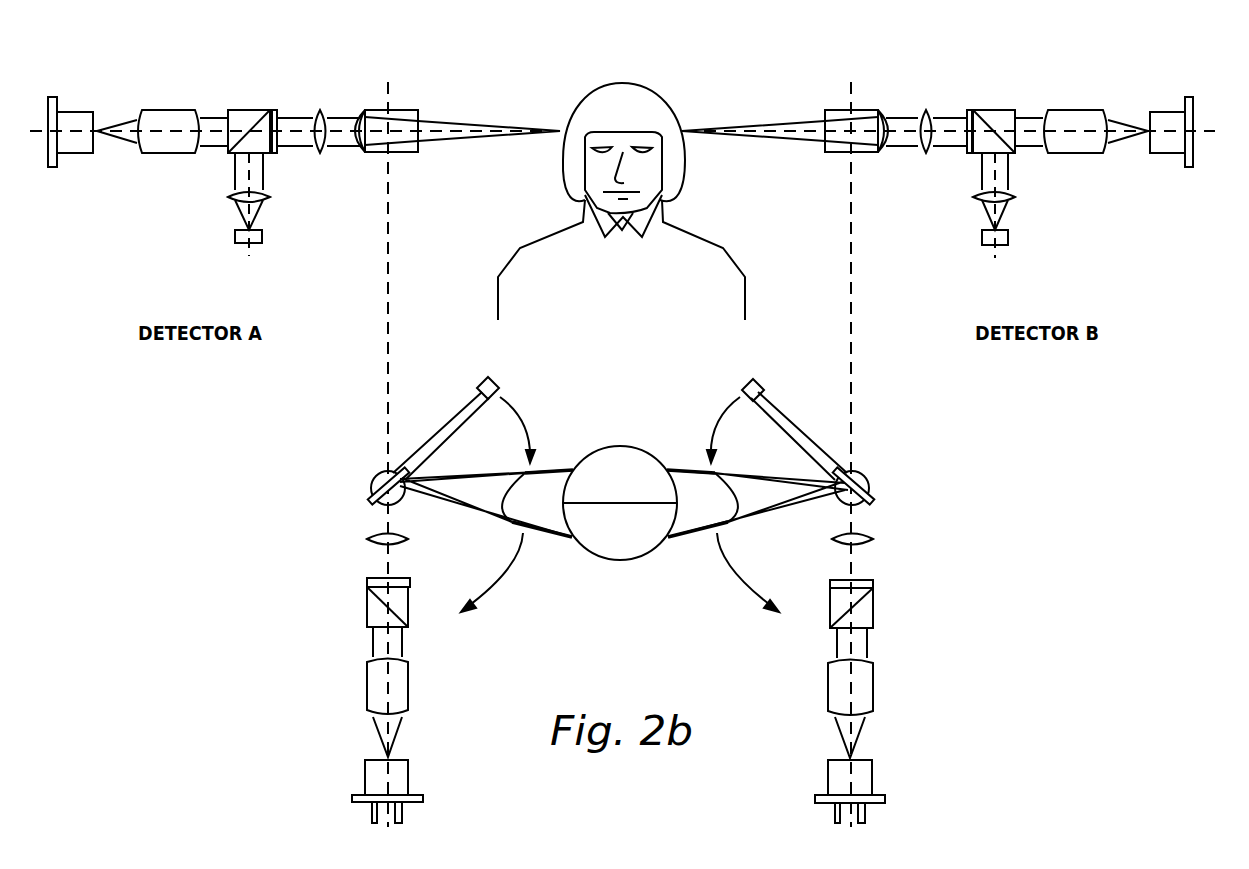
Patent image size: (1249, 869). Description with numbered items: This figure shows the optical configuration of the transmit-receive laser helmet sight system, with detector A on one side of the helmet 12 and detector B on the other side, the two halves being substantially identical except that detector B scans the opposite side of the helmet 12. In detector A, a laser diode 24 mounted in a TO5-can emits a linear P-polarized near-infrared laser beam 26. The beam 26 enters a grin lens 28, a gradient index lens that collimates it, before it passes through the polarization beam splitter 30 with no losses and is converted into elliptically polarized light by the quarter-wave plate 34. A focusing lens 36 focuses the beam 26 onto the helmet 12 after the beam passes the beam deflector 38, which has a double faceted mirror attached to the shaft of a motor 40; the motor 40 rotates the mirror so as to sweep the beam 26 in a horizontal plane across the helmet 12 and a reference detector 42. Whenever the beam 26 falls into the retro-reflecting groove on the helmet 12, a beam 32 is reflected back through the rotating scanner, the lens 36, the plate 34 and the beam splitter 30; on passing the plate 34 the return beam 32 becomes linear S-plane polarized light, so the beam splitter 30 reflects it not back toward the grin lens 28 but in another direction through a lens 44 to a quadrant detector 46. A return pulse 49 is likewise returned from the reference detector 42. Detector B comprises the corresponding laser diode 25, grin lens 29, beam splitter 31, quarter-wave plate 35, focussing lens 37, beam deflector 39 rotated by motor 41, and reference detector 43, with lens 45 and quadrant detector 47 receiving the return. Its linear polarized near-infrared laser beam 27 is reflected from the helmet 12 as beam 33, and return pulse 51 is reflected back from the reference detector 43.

The helmet 12 is at (606, 86).
The laser diode 24 is at (73, 112).
The laser diode 25 is at (1172, 112).
The laser beam 26 is at (125, 121).
The laser beam 27 is at (1122, 125).
The grin lens 28 is at (160, 110).
The grin lens 29 is at (1085, 110).
The polarization beam splitter 30 is at (250, 110).
The beam splitter 31 is at (995, 110).
The reflected beam 32 is at (455, 120).
The reflected beam 33 is at (790, 120).
The quarter-wave plate 34 is at (275, 153).
The quarter-wave plate 35 is at (970, 153).
The focusing lens 36 is at (321, 153).
The focussing lens 37 is at (925, 153).
The beam deflector 38 is at (404, 110).
The beam deflector 39 is at (846, 110).
The motor 40 is at (385, 472).
The motor 41 is at (868, 473).
The reference detector 42 is at (477, 380).
The reference detector 43 is at (764, 383).
The lens 44 is at (232, 199).
The lens 45 is at (1012, 199).
The quadrant detector 46 is at (235, 240).
The quadrant detector 47 is at (1010, 240).
The return pulse 49 is at (235, 175).
The return pulse 51 is at (1010, 178).